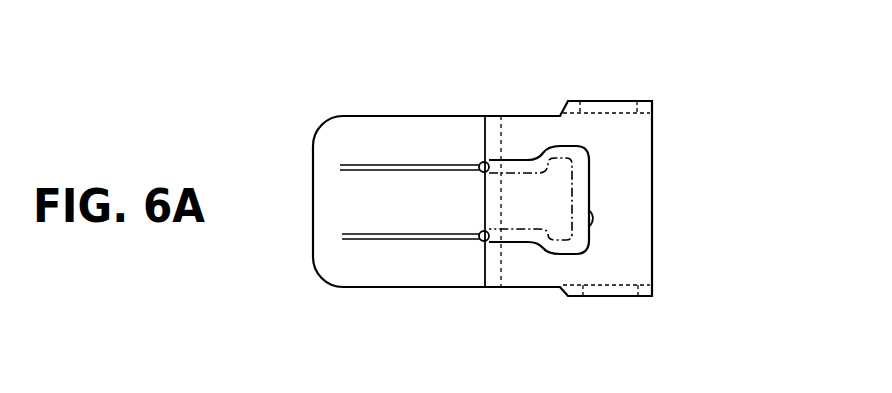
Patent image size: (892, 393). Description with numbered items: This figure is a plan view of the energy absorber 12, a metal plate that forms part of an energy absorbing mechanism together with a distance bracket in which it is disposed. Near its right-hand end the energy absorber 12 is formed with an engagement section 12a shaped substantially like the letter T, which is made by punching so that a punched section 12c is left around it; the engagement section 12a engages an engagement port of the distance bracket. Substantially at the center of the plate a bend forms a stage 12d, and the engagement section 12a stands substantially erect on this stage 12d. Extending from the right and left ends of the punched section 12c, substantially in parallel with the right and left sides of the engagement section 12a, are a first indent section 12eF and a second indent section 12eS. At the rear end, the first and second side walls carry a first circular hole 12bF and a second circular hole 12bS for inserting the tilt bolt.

The energy absorber 12 is at (469, 117).
The engagement section 12a is at (497, 197).
The first circular hole 12bF is at (608, 100).
The second circular hole 12bS is at (612, 297).
The punched section 12c is at (592, 227).
The stage 12d is at (483, 263).
The first indent section 12eF is at (404, 163).
The second indent section 12eS is at (358, 241).